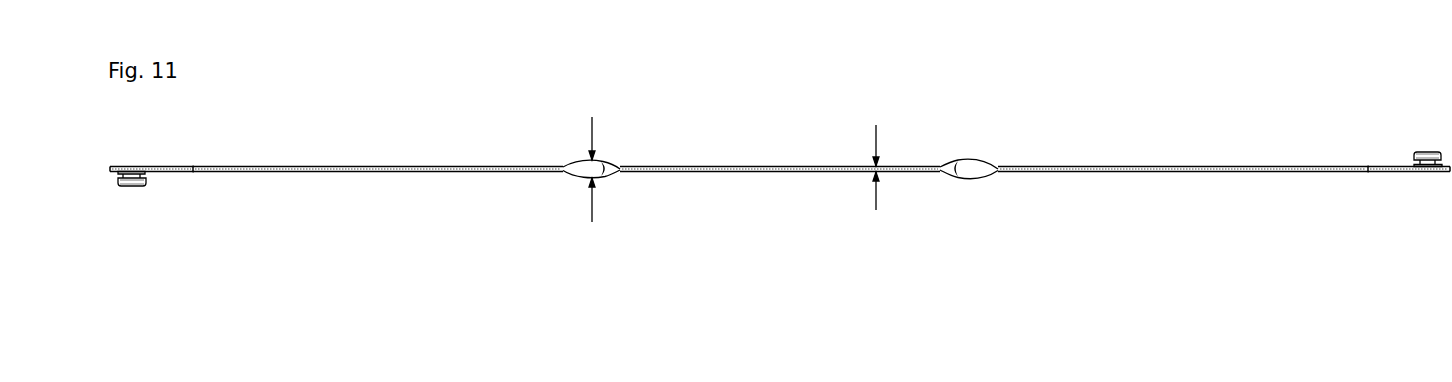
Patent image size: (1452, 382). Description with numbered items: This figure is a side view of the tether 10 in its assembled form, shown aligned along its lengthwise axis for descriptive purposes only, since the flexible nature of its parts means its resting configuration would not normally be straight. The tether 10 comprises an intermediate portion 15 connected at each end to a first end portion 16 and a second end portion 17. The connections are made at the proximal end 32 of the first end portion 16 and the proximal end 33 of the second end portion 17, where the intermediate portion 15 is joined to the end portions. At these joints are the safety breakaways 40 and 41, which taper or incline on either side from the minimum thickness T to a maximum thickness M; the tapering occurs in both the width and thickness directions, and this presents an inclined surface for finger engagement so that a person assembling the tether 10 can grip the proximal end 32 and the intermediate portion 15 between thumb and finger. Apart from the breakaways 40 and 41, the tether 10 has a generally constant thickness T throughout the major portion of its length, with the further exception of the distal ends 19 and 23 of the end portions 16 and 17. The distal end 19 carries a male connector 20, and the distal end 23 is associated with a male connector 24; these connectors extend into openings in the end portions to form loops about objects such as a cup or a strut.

The tether 10 is at (765, 157).
The intermediate portion 15 is at (791, 166).
The first end portion 16 is at (362, 166).
The second end portion 17 is at (1198, 166).
The distal end 19 is at (137, 166).
The male connector 20 is at (137, 185).
The distal end 23 is at (1428, 172).
The male connector 24 is at (1427, 152).
The proximal end 32 is at (578, 167).
The proximal end 33 is at (983, 174).
The safety breakaway 40 is at (582, 162).
The safety breakaway 41 is at (972, 158).
The maximum thickness M is at (592, 203).
The thickness T is at (876, 197).